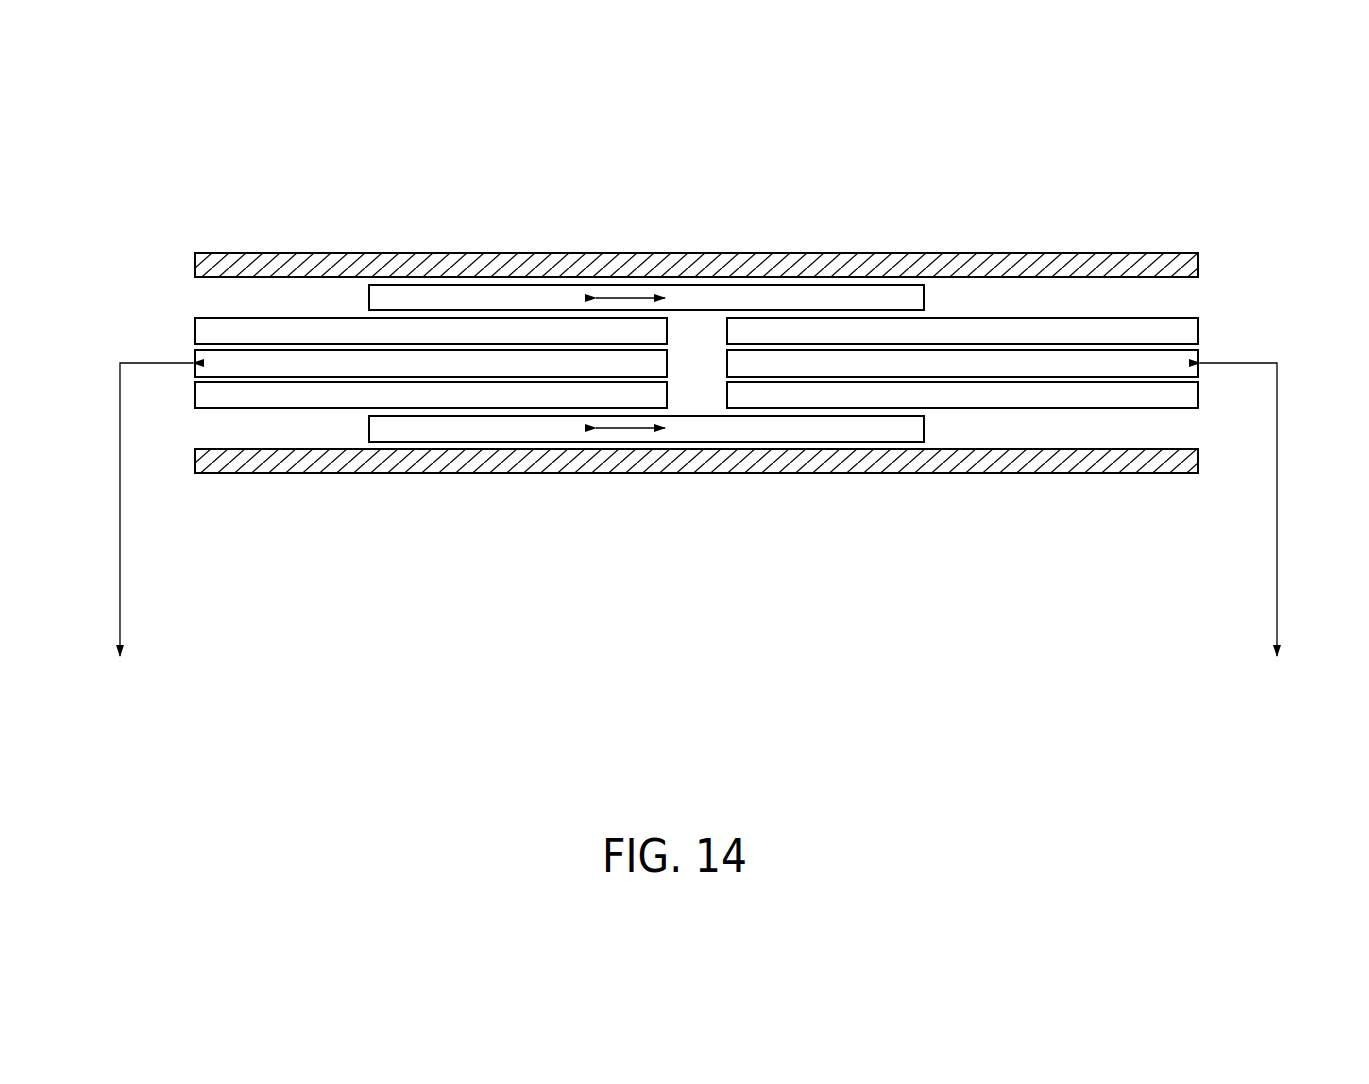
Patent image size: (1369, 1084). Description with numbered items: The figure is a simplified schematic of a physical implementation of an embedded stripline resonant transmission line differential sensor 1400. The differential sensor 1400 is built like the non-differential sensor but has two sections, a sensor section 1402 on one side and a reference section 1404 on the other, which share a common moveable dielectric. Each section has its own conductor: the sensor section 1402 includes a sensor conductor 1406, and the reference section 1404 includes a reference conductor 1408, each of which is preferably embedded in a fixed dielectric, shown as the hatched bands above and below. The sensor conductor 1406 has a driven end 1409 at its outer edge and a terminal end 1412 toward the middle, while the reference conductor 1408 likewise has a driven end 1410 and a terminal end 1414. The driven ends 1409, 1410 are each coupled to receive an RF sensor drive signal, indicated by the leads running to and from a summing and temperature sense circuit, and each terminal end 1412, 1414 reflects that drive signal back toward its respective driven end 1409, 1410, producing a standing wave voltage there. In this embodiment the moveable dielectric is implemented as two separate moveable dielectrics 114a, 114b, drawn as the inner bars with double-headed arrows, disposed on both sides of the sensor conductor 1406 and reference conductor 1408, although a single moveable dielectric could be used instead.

The differential sensor 1400 is at (703, 233).
The sensor section 1402 is at (181, 297).
The reference section 1404 is at (1212, 297).
The sensor conductor 1406 is at (337, 360).
The reference conductor 1408 is at (1085, 362).
The driven end 1409 is at (195, 353).
The driven end 1410 is at (1200, 355).
The terminal end 1412 is at (667, 363).
The terminal end 1414 is at (727, 367).
The moveable dielectric 114a is at (510, 297).
The moveable dielectric 114b is at (680, 433).